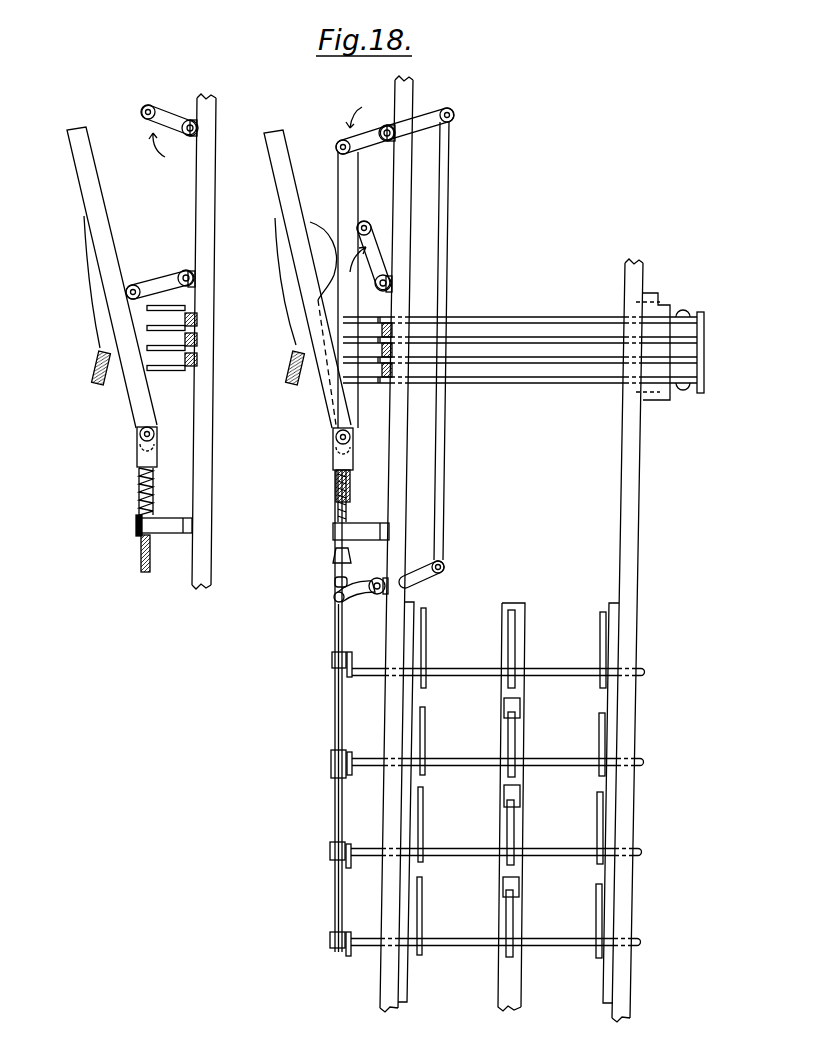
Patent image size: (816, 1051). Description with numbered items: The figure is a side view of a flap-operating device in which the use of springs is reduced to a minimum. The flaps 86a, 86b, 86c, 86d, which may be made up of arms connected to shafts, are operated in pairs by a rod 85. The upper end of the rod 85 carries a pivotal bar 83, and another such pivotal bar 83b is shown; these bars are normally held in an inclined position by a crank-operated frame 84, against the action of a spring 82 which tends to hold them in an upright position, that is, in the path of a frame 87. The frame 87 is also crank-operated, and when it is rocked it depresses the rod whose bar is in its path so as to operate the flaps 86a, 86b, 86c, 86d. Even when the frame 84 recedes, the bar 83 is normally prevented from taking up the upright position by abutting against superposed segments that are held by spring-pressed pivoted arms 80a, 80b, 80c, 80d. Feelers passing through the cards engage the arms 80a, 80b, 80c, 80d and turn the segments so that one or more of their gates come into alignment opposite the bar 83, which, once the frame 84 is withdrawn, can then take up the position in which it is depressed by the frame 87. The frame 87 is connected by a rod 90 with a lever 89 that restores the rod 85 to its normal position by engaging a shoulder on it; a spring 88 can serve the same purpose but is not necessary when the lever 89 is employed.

The pivoted arm 80a is at (493, 322).
The pivoted arm 80b is at (515, 342).
The pivoted arm 80c is at (537, 362).
The pivoted arm 80d is at (553, 382).
The spring 82 is at (97, 287).
The pivotal bar 83 is at (330, 388).
The pivotal bar 83b is at (347, 180).
The crank-operated frame 84 is at (171, 283).
The rod 85 is at (337, 825).
The flap 86a is at (424, 662).
The flap 86b is at (424, 752).
The flap 86c is at (422, 842).
The flap 86d is at (420, 920).
The frame 87 is at (160, 117).
The spring 88 is at (338, 505).
The lever 89 is at (342, 593).
The rod 90 is at (443, 177).